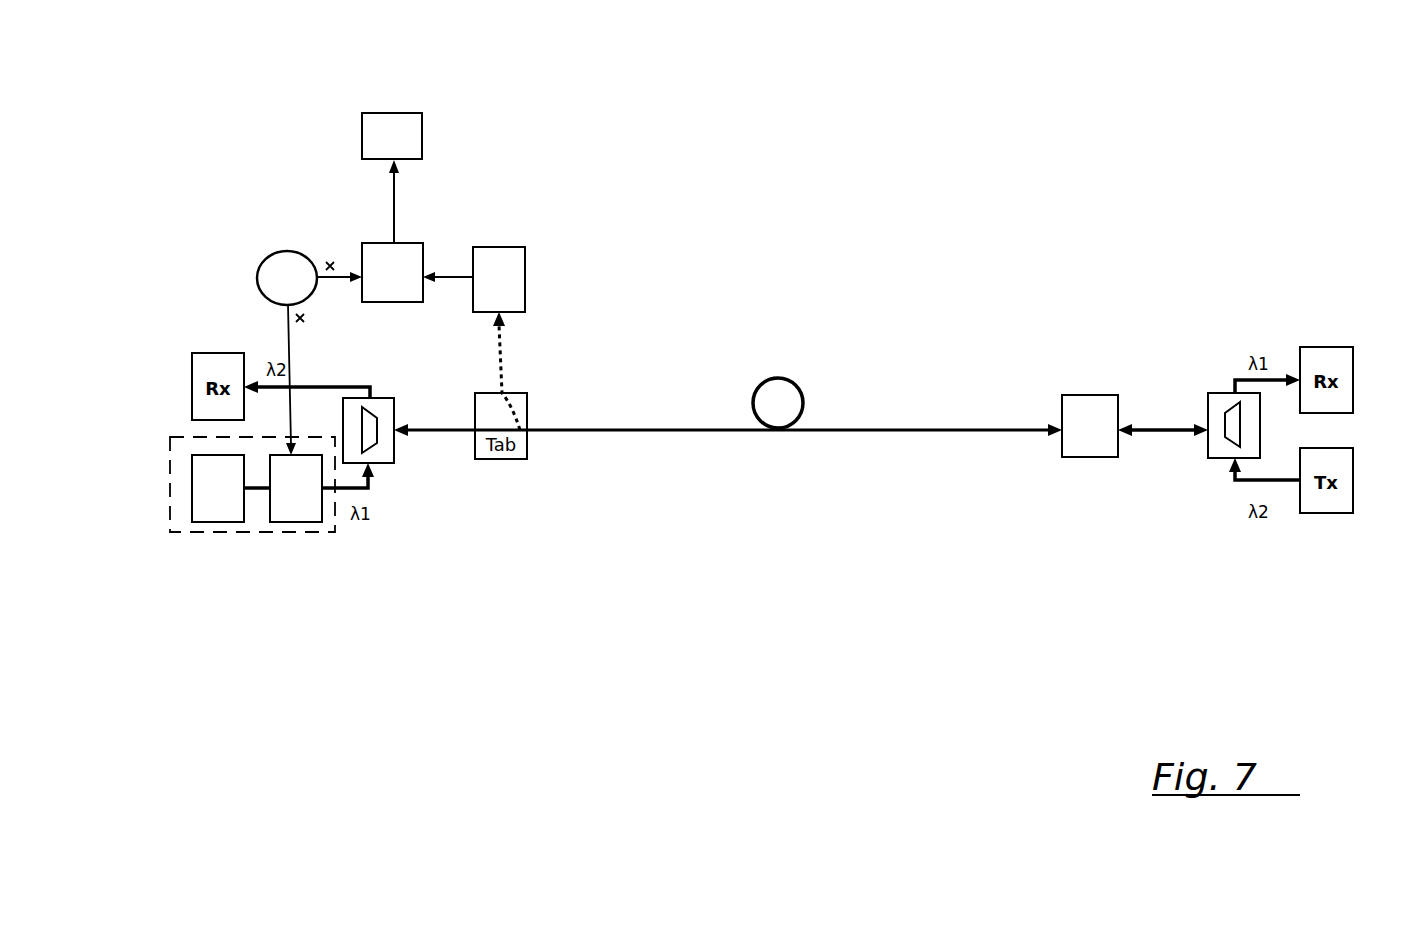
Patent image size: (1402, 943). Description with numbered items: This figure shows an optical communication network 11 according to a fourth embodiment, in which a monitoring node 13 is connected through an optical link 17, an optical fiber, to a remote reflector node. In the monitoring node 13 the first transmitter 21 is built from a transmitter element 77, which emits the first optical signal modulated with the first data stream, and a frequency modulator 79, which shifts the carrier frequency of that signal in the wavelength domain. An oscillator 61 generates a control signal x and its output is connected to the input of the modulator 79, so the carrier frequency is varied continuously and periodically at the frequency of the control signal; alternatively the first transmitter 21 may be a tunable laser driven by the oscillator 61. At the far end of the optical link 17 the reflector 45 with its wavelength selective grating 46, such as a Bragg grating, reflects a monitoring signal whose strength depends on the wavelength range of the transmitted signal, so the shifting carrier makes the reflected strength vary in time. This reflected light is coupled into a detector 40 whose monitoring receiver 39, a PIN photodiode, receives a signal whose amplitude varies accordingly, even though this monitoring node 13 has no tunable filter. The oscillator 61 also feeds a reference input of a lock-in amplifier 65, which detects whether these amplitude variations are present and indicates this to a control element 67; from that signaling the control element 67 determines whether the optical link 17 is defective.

The optical communication network 11 is at (250, 114).
The monitoring node 13 is at (547, 617).
The optical link 17 is at (822, 428).
The first transmitter 21 is at (322, 532).
The monitoring receiver 39 is at (503, 247).
The detector 40 is at (626, 134).
The reflector 45 is at (1092, 303).
The wavelength selective grating 46 is at (1075, 395).
The oscillator 61 is at (282, 253).
The lock-in amplifier 65 is at (405, 243).
The control element 67 is at (422, 138).
The transmitter element 77 is at (206, 508).
The frequency modulator 79 is at (288, 512).